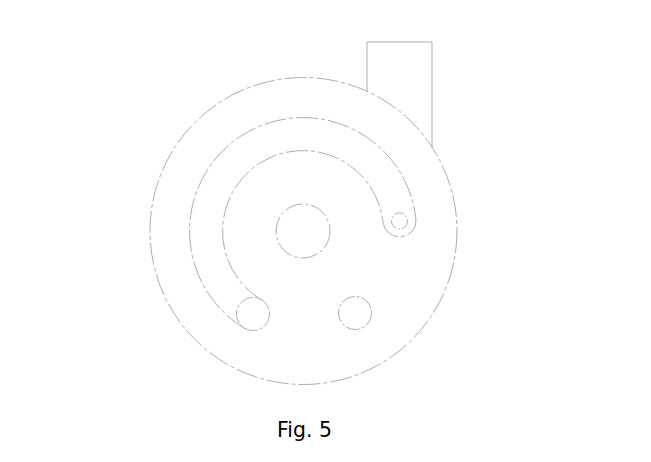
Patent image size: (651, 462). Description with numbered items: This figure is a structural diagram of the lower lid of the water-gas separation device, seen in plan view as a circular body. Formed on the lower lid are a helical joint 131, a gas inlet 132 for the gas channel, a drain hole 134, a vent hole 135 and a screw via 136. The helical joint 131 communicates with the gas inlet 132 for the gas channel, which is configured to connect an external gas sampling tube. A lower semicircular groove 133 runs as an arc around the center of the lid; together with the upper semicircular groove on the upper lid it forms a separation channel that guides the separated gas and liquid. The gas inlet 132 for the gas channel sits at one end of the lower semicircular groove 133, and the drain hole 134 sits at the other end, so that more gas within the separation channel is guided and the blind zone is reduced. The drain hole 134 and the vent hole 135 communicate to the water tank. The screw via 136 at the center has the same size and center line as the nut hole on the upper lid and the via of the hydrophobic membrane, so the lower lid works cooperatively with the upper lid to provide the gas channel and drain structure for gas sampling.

The helical joint 131 is at (402, 75).
The gas inlet for a gas channel 132 is at (400, 221).
The lower semicircular groove 133 is at (215, 197).
The drain hole 134 is at (253, 313).
The vent hole 135 is at (355, 313).
The screw via 136 is at (303, 231).